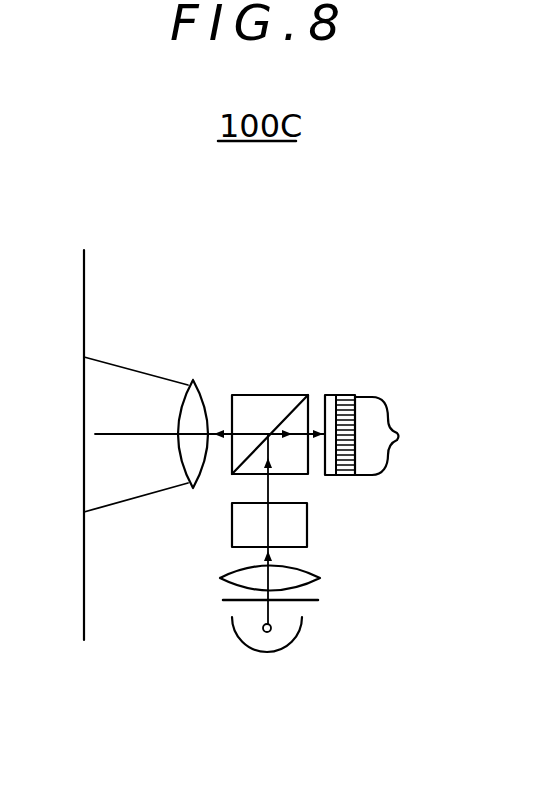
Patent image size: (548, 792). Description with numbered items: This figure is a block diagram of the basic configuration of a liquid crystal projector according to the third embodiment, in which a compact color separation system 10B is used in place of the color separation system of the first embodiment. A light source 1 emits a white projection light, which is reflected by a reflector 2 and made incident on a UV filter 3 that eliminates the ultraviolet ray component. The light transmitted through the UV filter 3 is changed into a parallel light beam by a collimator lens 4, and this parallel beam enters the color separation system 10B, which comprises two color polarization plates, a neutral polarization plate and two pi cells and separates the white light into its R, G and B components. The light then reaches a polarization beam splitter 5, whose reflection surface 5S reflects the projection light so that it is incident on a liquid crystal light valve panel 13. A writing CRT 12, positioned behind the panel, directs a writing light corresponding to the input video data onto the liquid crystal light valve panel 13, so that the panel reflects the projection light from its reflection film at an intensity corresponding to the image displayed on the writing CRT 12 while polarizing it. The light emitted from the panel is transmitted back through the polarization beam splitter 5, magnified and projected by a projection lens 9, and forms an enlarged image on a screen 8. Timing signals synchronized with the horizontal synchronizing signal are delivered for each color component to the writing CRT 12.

The light source 1 is at (272, 632).
The reflector 2 is at (240, 640).
The UV filter 3 is at (225, 600).
The collimator lens 4 is at (220, 577).
The polarization beam splitter 5 is at (262, 395).
The reflection surface 5S is at (283, 412).
The screen 8 is at (84, 250).
The projection lens 9 is at (195, 380).
The color separation system 10B is at (307, 530).
The writing CRT 12 is at (377, 475).
The liquid crystal light valve panel 13 is at (343, 475).